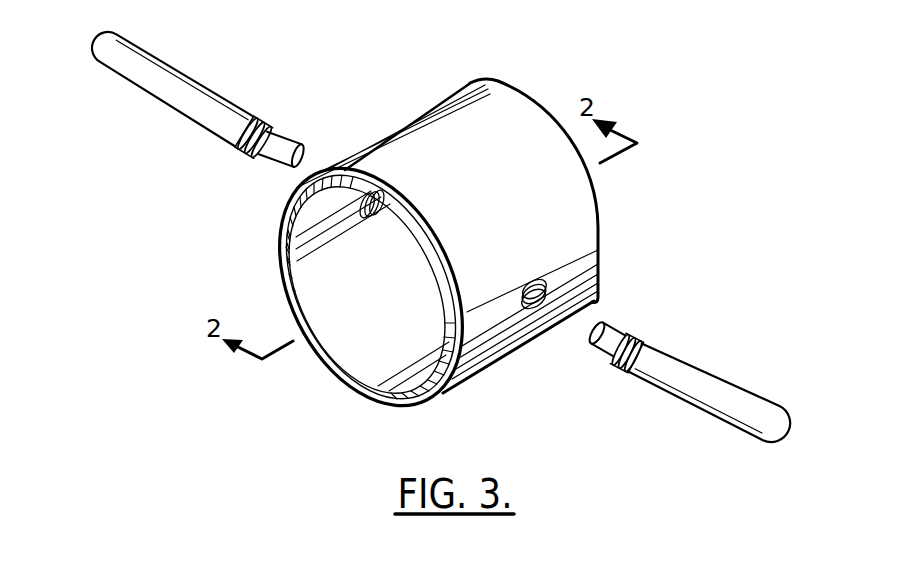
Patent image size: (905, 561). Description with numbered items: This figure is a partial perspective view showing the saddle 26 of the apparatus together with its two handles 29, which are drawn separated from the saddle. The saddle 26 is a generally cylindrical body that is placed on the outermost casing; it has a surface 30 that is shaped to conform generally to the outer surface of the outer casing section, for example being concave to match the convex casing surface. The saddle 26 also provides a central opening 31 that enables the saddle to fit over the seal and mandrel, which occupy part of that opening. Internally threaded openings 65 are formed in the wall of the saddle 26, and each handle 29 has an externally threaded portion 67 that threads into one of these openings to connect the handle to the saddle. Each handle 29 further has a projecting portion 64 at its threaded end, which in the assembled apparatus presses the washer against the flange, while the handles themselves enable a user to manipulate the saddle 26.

The saddle 26 is at (520, 88).
The handles 29 is at (213, 132).
The surface 30 is at (599, 228).
The central opening 31 is at (388, 323).
The projecting portions 64 is at (292, 146).
The internally threaded openings 65 is at (385, 208).
The externally threaded portions 67 is at (250, 150).